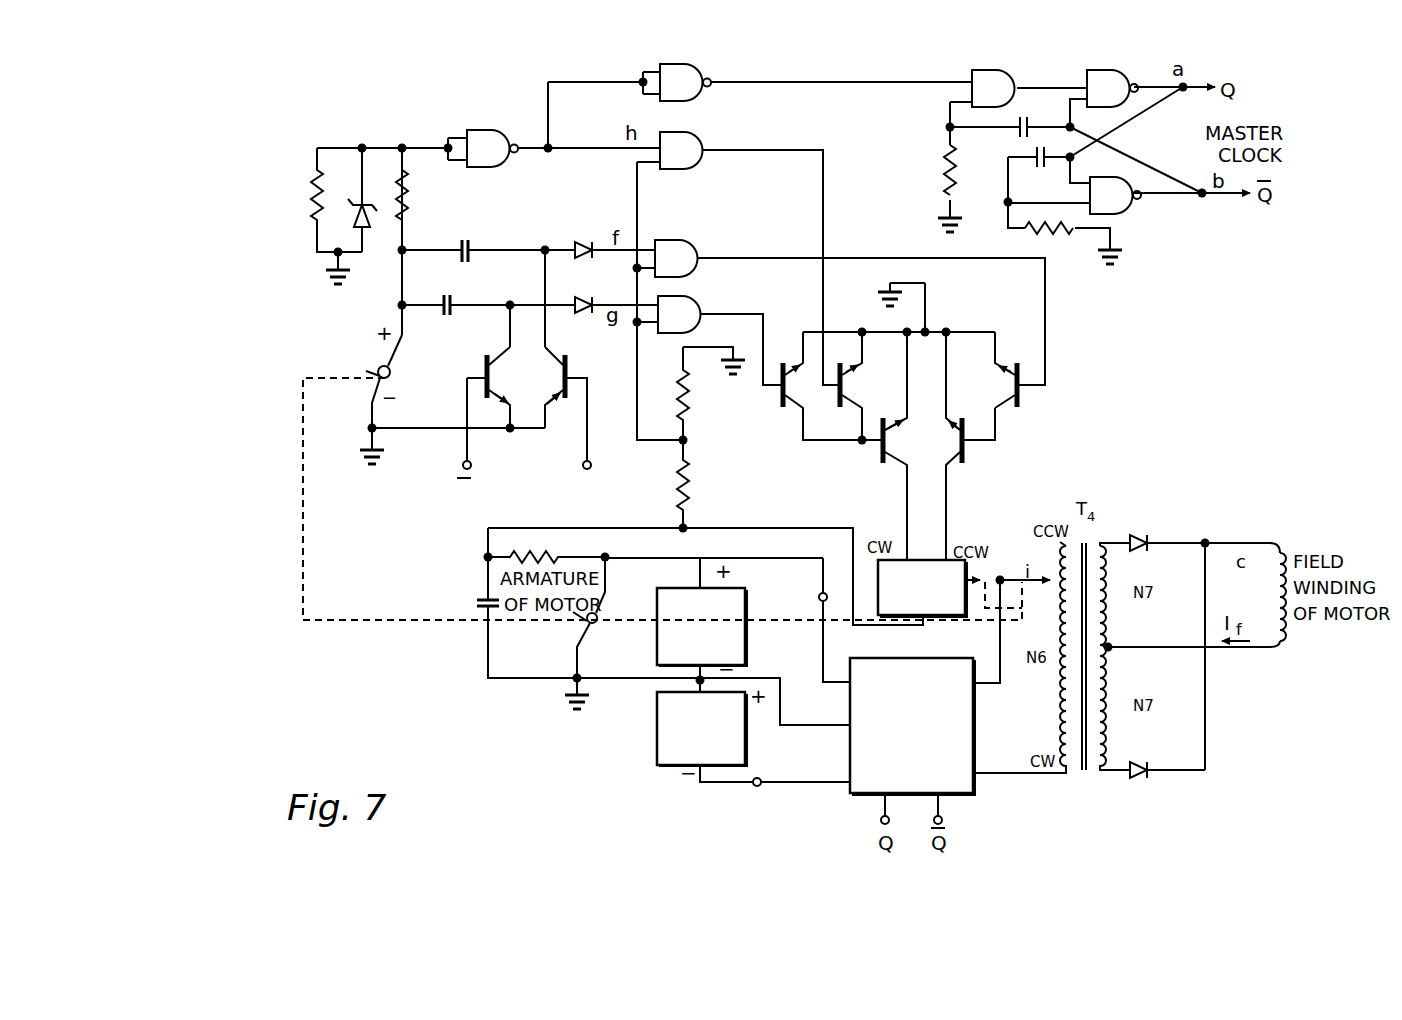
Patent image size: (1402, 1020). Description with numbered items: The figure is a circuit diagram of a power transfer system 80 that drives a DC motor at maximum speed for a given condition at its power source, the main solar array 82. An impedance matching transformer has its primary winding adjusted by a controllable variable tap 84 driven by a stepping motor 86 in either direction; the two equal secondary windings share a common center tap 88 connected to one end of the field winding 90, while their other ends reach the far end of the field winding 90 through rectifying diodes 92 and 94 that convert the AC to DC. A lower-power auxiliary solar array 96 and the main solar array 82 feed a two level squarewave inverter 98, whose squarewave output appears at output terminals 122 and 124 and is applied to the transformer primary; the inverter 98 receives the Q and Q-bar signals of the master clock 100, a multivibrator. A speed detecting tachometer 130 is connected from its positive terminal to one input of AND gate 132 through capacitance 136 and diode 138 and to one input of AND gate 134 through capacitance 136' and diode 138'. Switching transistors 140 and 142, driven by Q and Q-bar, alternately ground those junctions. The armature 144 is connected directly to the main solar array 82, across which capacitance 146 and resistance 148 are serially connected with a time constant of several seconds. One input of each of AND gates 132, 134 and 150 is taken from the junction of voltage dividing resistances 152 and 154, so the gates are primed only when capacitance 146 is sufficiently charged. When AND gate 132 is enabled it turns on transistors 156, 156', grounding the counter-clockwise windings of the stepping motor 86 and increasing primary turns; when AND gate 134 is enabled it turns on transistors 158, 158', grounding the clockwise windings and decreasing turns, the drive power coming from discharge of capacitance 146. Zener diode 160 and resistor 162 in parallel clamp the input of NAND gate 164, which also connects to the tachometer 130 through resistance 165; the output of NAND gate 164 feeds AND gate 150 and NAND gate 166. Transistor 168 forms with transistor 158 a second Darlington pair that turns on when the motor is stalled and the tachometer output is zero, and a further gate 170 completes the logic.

The power transfer system 80 is at (798, 76).
The main solar array 82 is at (746, 592).
The controllable variable tap 84 is at (1058, 596).
The stepping motor 86 is at (924, 554).
The common center tap 88 is at (1156, 647).
The field winding 90 is at (1272, 592).
The rectifying diode 92 is at (1140, 534).
The rectifying diode 94 is at (1141, 780).
The auxiliary solar array 96 is at (657, 733).
The two level squarewave inverter 98 is at (975, 792).
The master clock 100 is at (1177, 143).
The output terminal 122 is at (820, 602).
The output terminal 124 is at (762, 778).
The speed detecting tachometer 130 is at (370, 366).
The AND gate 132 is at (692, 240).
The AND gate 134 is at (694, 308).
The capacitance 136 is at (484, 232).
The capacitance 136' is at (436, 289).
The diode 138 is at (576, 230).
The diode 138' is at (570, 288).
The switching transistor 140 is at (564, 356).
The switching transistor 142 is at (484, 362).
The armature 144 is at (600, 610).
The capacitance 146 is at (478, 596).
The resistance 148 is at (538, 534).
The AND gate 150 is at (704, 142).
The voltage dividing resistance 152 is at (689, 394).
The voltage dividing resistance 154 is at (692, 472).
The transistor 156 is at (970, 446).
The transistor 156' is at (1039, 379).
The transistor 158 is at (872, 446).
The transistor 158' is at (801, 386).
The Zener diode 160 is at (349, 197).
The resistor 162 is at (310, 202).
The NAND gate 164 is at (484, 128).
The resistance 165 is at (406, 202).
The NAND gate 166 is at (685, 64).
The transistor 168 is at (850, 384).
The AND gate 170 is at (991, 70).